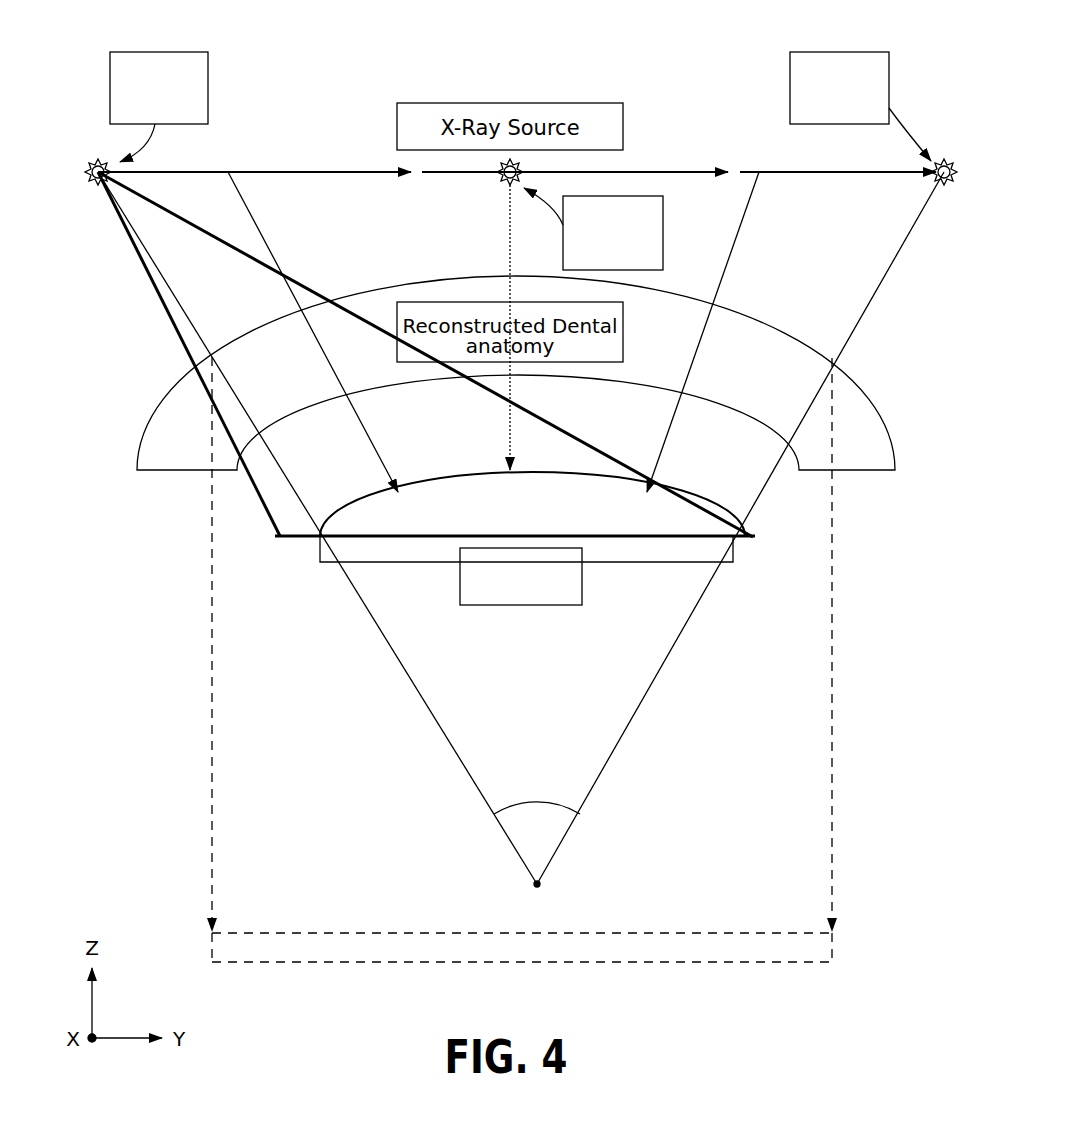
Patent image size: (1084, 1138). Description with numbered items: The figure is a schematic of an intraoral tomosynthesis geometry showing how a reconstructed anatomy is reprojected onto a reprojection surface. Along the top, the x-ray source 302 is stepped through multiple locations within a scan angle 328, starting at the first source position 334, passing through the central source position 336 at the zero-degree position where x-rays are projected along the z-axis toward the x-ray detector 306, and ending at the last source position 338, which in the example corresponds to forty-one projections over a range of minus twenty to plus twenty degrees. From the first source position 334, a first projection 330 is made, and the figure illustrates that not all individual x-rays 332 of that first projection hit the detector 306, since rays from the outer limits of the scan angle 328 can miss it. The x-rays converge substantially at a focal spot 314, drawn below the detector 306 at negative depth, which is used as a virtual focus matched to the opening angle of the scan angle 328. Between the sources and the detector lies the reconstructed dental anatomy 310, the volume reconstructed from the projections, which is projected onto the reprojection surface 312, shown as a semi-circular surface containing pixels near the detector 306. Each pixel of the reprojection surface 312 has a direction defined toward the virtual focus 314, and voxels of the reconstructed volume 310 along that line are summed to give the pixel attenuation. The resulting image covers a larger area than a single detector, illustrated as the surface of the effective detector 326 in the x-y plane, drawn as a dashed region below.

The x-ray source 302 is at (95, 184).
The x-ray detector 306 is at (328, 566).
The reconstructed dental anatomy 310 is at (183, 474).
The reprojection surface 312 is at (696, 504).
The focal spot 314 is at (528, 881).
The effective detector 326 is at (272, 952).
The scan angle 328 is at (542, 801).
The first projection 330 is at (152, 262).
The individual x-rays 332 is at (175, 332).
The source position #1 334 is at (198, 52).
The central source position 336 is at (643, 196).
The last source position 338 is at (803, 52).